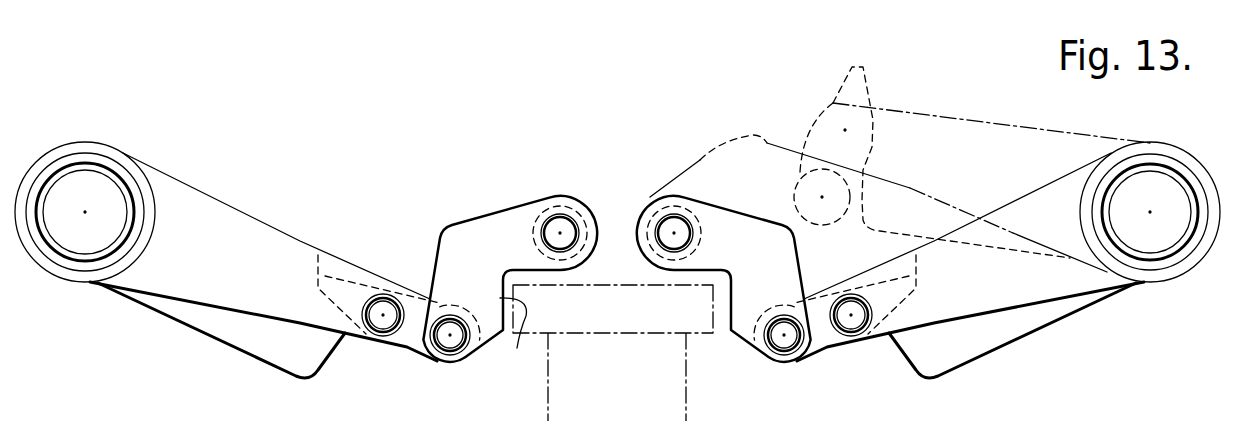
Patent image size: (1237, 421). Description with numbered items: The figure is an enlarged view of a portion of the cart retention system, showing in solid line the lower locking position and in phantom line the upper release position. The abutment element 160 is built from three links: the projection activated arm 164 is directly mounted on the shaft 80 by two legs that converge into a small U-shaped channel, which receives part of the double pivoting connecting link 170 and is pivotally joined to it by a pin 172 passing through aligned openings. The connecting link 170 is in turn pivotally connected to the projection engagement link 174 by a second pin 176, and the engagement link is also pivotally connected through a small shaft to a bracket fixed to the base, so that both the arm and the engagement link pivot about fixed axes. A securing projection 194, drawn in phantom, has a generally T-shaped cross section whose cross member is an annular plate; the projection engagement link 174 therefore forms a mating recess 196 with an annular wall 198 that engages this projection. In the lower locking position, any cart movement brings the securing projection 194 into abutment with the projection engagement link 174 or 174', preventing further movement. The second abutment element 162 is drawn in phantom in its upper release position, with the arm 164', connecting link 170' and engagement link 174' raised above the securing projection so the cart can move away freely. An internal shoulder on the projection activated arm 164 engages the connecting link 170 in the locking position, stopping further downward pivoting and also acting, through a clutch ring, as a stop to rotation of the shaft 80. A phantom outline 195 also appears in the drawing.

The shaft 80 is at (123, 183).
The abutment element 160 is at (259, 216).
The abutment element 162 is at (824, 362).
The projection activated arm 164 is at (617, 351).
The projection activated arm 164' is at (991, 162).
The connecting link 170 is at (263, 336).
The connecting link 170' is at (958, 242).
The pin 172 is at (382, 312).
The projection engagement link 174 is at (510, 302).
The projection engagement link 174' is at (724, 229).
The second pin 176 is at (447, 340).
The securing projection 194 is at (592, 378).
The plate in alternate position 195 is at (320, 262).
The mating recess 196 is at (533, 273).
The annular wall 198 is at (517, 348).